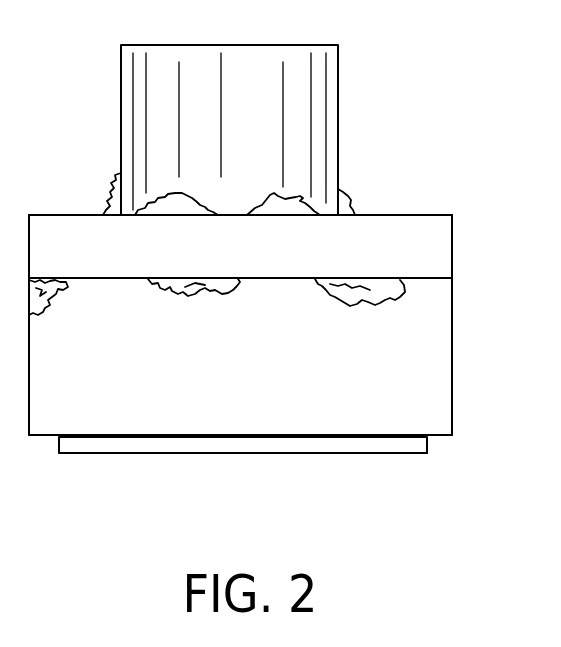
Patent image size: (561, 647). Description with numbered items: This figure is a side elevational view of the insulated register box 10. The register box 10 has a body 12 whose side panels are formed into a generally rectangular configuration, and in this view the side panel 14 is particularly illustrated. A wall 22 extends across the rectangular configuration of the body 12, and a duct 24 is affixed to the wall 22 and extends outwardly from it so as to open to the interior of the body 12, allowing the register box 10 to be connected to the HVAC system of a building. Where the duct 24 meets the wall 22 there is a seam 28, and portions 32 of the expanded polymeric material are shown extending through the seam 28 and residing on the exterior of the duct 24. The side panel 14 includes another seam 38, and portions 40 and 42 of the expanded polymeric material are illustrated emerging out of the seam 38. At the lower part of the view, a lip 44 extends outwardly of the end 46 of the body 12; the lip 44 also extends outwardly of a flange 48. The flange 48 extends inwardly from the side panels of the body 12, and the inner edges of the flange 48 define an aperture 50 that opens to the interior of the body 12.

The register box 10 is at (426, 124).
The body 12 is at (448, 396).
The side panel 14 is at (437, 350).
The wall 22 is at (399, 215).
The duct 24 is at (324, 103).
The seam 28 is at (103, 212).
The portions of expanded polymeric material 32 is at (188, 193).
The seam 38 is at (273, 279).
The portion of expanded polymeric material 40 is at (185, 297).
The portion of expanded polymeric material 42 is at (353, 300).
The lip 44 is at (377, 453).
The end 46 is at (440, 438).
The flange 48 is at (45, 437).
The aperture 50 is at (218, 453).